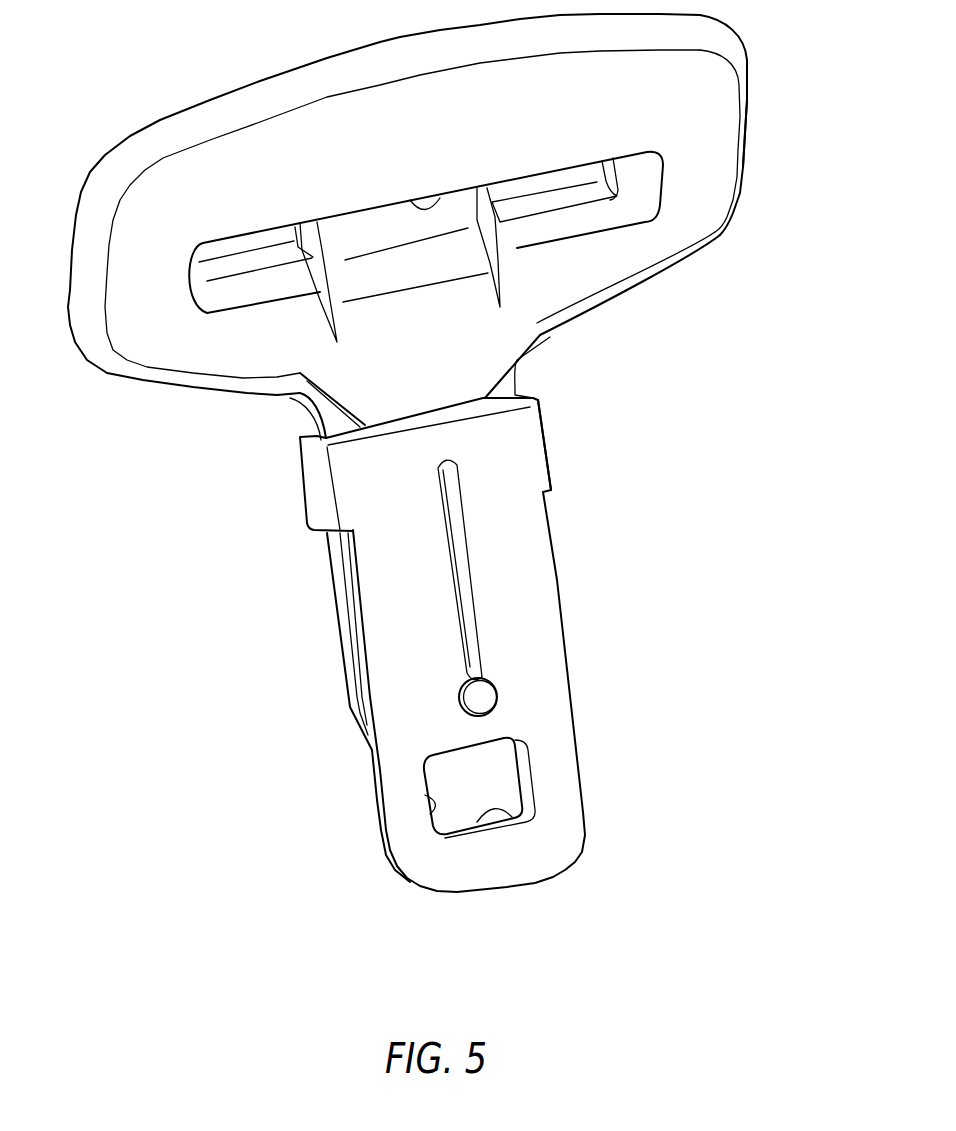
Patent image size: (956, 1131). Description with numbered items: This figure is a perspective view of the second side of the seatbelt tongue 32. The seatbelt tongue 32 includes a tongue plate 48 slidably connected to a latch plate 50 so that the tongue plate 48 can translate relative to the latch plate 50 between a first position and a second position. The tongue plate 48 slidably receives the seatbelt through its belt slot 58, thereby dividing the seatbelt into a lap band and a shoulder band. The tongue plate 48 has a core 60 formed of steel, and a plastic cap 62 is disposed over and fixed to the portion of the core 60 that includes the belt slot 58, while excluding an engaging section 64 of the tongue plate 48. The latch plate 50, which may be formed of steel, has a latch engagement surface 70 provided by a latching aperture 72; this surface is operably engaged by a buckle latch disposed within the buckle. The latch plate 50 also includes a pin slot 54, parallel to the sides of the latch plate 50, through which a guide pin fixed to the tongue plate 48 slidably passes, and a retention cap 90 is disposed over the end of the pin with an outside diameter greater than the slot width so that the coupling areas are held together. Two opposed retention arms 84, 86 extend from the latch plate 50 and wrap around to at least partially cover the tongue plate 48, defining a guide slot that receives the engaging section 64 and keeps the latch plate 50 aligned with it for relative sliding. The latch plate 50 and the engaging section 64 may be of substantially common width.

The seatbelt tongue 32 is at (175, 78).
The plastic cap 62 is at (746, 165).
The tongue plate 48 is at (647, 292).
The belt slot 58 is at (412, 203).
The core 60 is at (535, 352).
The latch plate 50 is at (571, 713).
The retention arm 84 is at (549, 452).
The retention arm 86 is at (302, 477).
The engaging section 64 is at (339, 622).
The pin slot 54 is at (457, 607).
The retention cap 90 is at (498, 694).
The latching aperture 72 is at (425, 796).
The latch engagement surface 70 is at (507, 811).